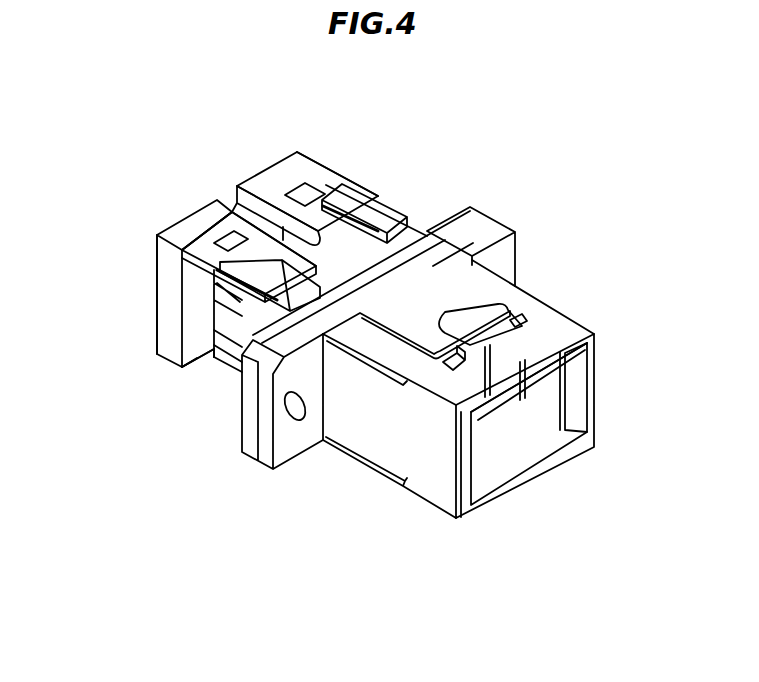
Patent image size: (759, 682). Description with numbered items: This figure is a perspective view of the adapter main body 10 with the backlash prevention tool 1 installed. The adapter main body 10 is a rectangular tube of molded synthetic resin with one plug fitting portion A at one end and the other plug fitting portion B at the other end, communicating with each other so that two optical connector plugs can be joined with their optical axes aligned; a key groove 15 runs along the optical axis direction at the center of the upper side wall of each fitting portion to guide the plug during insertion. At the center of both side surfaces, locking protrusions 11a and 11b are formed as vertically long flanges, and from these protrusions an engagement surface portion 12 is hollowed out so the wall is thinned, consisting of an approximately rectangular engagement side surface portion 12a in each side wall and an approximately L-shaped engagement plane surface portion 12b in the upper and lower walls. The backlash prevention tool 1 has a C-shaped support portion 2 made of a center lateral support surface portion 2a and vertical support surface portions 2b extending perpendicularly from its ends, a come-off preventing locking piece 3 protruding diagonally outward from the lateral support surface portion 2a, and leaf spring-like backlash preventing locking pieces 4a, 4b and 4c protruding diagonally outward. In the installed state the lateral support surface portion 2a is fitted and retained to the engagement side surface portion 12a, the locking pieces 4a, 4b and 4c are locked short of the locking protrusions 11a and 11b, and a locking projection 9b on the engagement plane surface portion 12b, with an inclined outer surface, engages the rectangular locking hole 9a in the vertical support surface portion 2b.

The adapter main body 10 is at (585, 306).
The engagement surface portion 12 is at (500, 486).
The engagement side surface portion 12a is at (407, 438).
The engagement plane surface portion 12b is at (470, 417).
The other plug fitting portion B is at (527, 455).
The one plug fitting portion A is at (170, 198).
The locking protrusion 11a is at (307, 450).
The locking protrusion 11b is at (507, 247).
The backlash preventing locking piece 4a is at (295, 290).
The backlash preventing locking piece 4b is at (227, 383).
The backlash preventing locking piece 4c is at (233, 407).
The key groove 15 is at (457, 320).
The backlash prevention tool 1 is at (298, 170).
The support portion 2 is at (328, 150).
The lateral support surface portion 2a is at (200, 367).
The vertical support surface portion 2b is at (277, 200).
The come-off preventing locking piece 3 is at (197, 365).
The locking hole 9a is at (212, 250).
The locking projection 9b is at (222, 242).